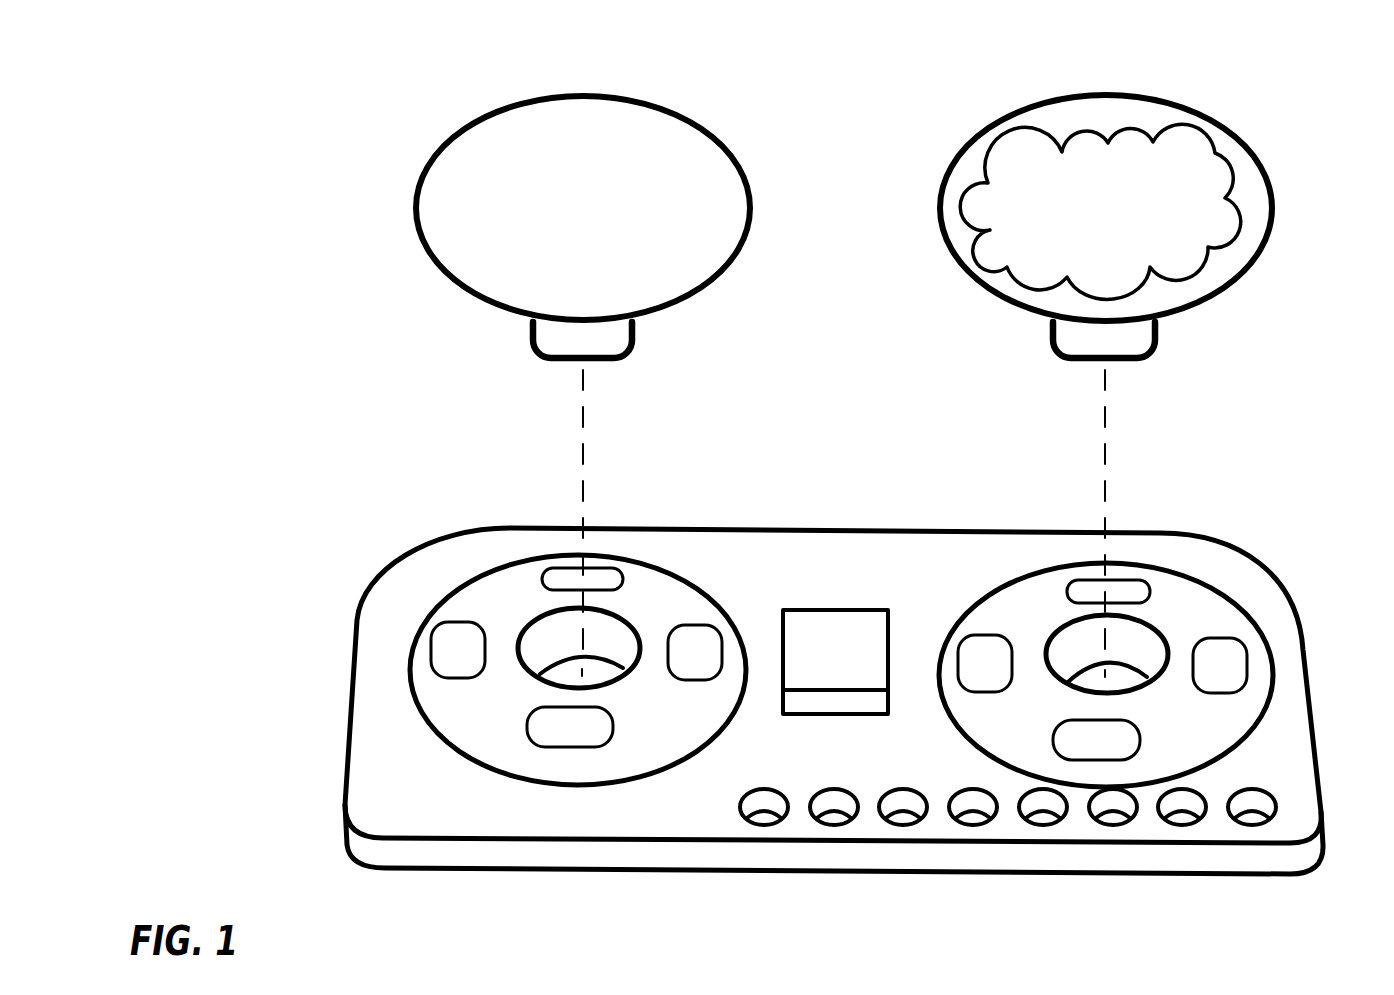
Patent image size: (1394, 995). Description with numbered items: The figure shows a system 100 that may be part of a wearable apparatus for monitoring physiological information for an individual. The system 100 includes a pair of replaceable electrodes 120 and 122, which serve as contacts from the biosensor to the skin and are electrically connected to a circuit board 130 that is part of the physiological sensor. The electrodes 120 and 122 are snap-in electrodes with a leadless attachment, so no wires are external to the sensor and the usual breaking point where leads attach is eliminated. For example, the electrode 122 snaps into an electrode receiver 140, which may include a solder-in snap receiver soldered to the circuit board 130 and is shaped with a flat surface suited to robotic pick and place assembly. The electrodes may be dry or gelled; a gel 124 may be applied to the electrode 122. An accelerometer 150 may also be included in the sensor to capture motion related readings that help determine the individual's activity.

The system 100 is at (242, 126).
The replaceable electrode 120 is at (430, 163).
The replaceable electrode 122 is at (940, 225).
The gel 124 is at (1185, 218).
The circuit board 130 is at (357, 603).
The electrode receiver 140 is at (1190, 577).
The accelerometer 150 is at (830, 610).